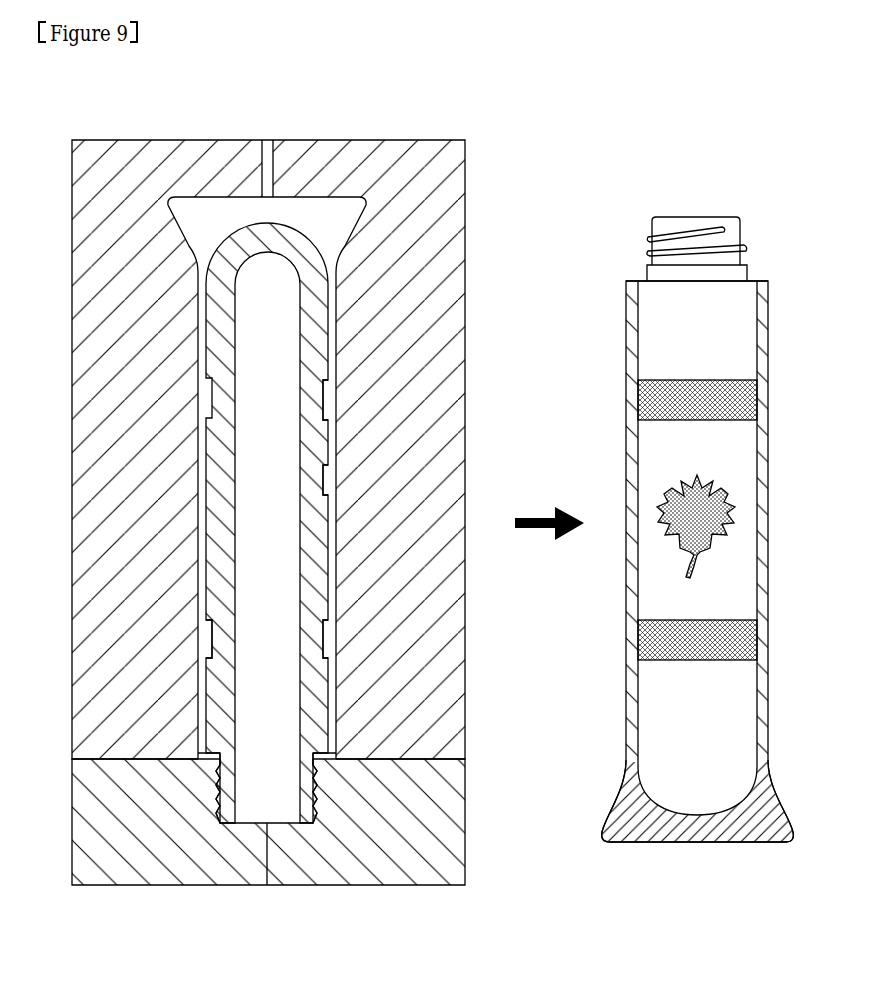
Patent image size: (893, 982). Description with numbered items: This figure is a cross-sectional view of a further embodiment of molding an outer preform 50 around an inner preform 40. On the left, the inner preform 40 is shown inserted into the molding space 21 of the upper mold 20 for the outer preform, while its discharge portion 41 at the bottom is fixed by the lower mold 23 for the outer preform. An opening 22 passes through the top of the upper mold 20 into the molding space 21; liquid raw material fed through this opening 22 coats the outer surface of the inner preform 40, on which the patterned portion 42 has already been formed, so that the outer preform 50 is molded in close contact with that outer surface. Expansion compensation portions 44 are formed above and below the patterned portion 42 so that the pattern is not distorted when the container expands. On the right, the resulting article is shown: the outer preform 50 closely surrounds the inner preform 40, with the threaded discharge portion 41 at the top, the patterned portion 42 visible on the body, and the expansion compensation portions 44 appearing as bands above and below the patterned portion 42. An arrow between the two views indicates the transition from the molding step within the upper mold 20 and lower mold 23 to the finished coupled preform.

The upper mold 20 is at (465, 209).
The molding space 21 is at (337, 224).
The opening 22 is at (266, 140).
The lower mold 23 is at (465, 811).
The inner preform 40 is at (313, 373).
The discharge portion 41 is at (222, 803).
The patterned portion 42 is at (318, 492).
The expansion compensation portions 44 is at (323, 642).
The outer preform 50 is at (768, 455).